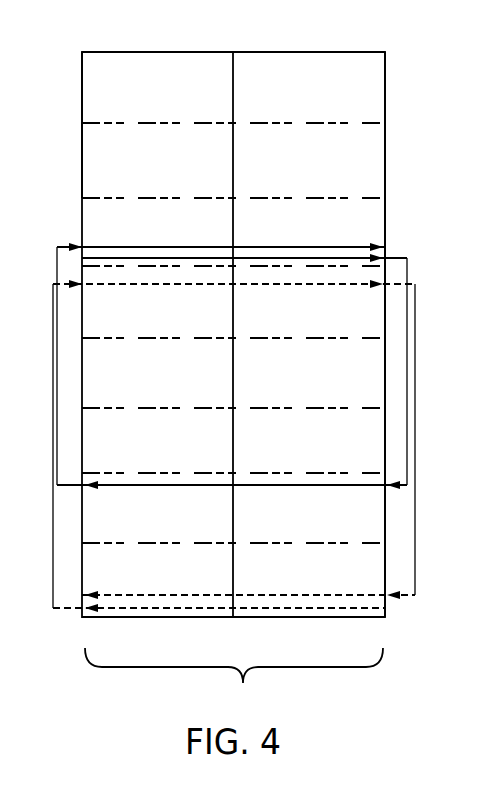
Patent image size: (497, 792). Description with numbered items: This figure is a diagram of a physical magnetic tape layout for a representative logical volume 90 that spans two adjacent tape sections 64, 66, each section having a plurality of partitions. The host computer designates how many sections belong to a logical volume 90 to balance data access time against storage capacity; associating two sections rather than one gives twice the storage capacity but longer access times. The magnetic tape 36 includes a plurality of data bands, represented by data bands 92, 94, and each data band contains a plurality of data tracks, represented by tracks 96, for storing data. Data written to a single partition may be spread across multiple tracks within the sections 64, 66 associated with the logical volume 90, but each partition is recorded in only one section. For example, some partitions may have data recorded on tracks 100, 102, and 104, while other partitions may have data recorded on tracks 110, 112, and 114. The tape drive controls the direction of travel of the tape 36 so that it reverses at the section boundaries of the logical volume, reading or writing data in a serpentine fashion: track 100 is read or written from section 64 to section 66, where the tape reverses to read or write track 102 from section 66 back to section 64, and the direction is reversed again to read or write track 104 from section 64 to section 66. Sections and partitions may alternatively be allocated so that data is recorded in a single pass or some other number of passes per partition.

The magnetic tape 36 is at (416, 147).
The tape section 64 is at (152, 60).
The tape section 66 is at (307, 60).
The logical volume 90 is at (233, 416).
The data band 92 is at (88, 92).
The data band 94 is at (88, 160).
The data tracks 96 is at (127, 222).
The track 100 is at (303, 253).
The track 102 is at (300, 483).
The track 104 is at (351, 246).
The track 110 is at (302, 614).
The track 112 is at (318, 288).
The track 114 is at (305, 592).